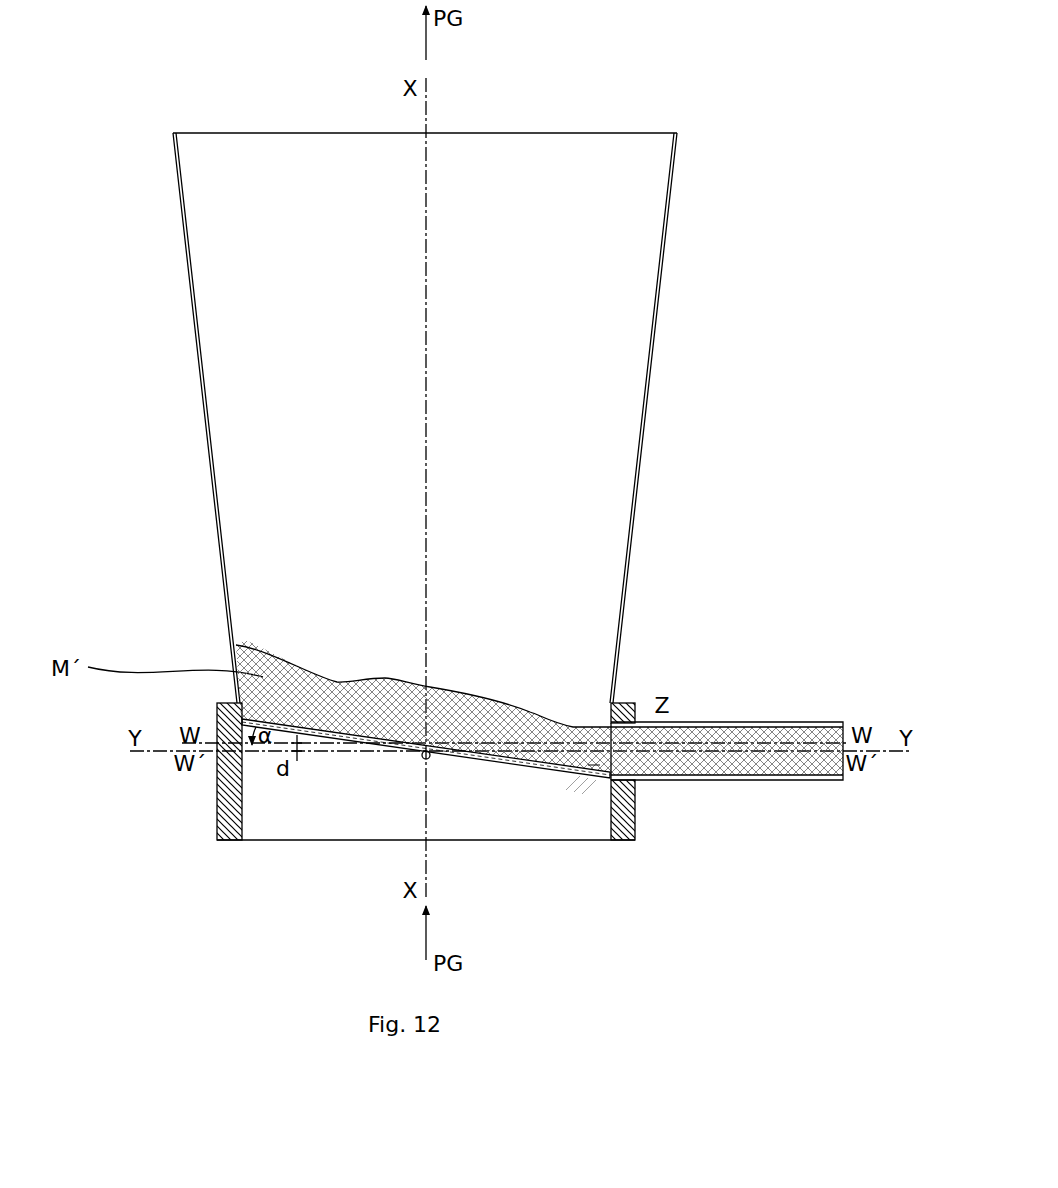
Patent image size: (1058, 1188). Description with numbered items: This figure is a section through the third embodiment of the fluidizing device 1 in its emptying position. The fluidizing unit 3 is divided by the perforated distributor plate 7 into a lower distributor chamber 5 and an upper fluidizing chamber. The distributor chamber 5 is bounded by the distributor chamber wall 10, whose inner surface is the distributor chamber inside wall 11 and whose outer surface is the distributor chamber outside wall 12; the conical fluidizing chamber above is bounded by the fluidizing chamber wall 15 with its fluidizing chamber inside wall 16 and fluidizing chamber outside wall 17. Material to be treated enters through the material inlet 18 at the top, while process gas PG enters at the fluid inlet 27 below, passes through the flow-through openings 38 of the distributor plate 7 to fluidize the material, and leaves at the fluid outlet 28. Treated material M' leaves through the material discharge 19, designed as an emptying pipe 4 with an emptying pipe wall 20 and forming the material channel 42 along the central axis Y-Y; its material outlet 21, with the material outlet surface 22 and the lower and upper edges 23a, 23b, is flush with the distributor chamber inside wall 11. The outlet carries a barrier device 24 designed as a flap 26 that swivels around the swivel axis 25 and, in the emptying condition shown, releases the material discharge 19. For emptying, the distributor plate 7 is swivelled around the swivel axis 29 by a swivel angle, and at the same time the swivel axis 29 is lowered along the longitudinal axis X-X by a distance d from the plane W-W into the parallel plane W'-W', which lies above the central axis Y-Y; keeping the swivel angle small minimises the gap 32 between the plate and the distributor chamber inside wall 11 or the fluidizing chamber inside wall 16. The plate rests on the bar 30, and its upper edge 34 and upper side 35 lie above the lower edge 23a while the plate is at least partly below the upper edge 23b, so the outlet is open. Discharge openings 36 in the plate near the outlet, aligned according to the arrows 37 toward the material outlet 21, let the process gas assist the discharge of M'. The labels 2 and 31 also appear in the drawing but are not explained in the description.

The fluidizing device 1 is at (797, 93).
The container 2 is at (95, 352).
The fluidizing unit 3 is at (672, 525).
The emptying pipe 4 is at (800, 797).
The distributor chamber 5 is at (637, 808).
The perforated distributor plate 7 is at (606, 736).
The distributor chamber wall 10 is at (627, 842).
The distributor chamber inside wall 11 is at (243, 812).
The distributor chamber outside wall 12 is at (216, 812).
The fluidizing chamber wall 15 is at (675, 163).
The fluidizing chamber inside wall 16 is at (668, 157).
The fluidizing chamber outside wall 17 is at (678, 140).
The material inlet 18 is at (303, 128).
The material discharge 19 is at (723, 723).
The emptying pipe wall 20 is at (830, 722).
The material outlet 21 is at (777, 722).
The material outlet surface 22 is at (541, 768).
The lower edge of material outlet 23a is at (636, 800).
The upper edge of material outlet 23b is at (623, 720).
The barrier device 24 is at (668, 722).
The swivel axis of barrier device 25 is at (608, 722).
The flap 26 is at (613, 742).
The fluid inlet 27 is at (500, 842).
The fluid outlet 28 is at (530, 128).
The swivel axis of distributor plate 29 is at (420, 757).
The bar 30 is at (606, 782).
The pipe lower inner corner 31 is at (613, 772).
The gap 32 is at (222, 742).
The upper edge of distributor plate 34 is at (600, 780).
The upper side of distributor plate 35 is at (370, 740).
The discharge opening 36 is at (582, 779).
The arrows 37 is at (569, 787).
The flow-through openings 38 is at (455, 760).
The material channel 42 is at (823, 767).